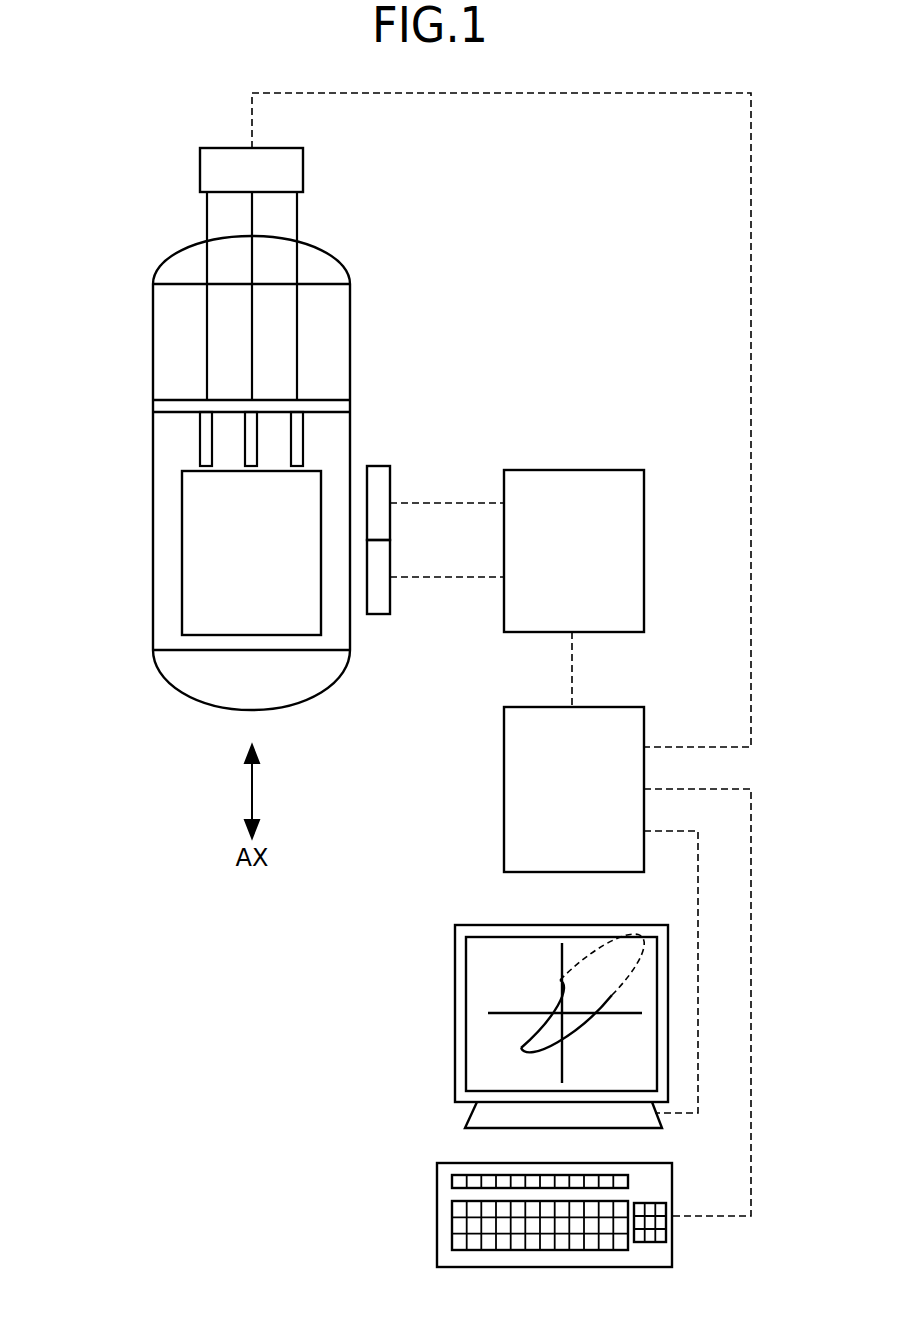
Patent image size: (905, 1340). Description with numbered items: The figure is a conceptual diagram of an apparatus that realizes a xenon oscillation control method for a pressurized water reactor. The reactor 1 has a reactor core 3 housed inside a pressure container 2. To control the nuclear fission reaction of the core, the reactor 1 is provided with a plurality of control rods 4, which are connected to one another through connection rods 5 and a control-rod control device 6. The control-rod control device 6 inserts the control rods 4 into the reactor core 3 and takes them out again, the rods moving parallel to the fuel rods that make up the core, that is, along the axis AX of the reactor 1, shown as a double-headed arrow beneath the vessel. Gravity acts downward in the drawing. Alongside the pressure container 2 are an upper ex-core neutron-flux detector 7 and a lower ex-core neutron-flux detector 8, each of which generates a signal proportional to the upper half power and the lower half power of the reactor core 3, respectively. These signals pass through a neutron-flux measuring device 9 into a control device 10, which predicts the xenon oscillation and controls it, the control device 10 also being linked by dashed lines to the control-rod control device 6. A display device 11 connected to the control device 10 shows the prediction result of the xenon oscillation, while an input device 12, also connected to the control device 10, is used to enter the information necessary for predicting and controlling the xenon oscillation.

The reactor 1 is at (125, 204).
The pressure container 2 is at (153, 302).
The reactor core 3 is at (198, 553).
The control rods 4 is at (251, 455).
The connection rods 5 is at (207, 308).
The control-rod control device 6 is at (303, 177).
The upper ex-core neutron-flux detector 7 is at (375, 487).
The lower ex-core neutron-flux detector 8 is at (380, 614).
The neutron-flux measuring device 9 is at (620, 497).
The control device 10 is at (504, 789).
The display device 11 is at (455, 1012).
The input device 12 is at (437, 1220).